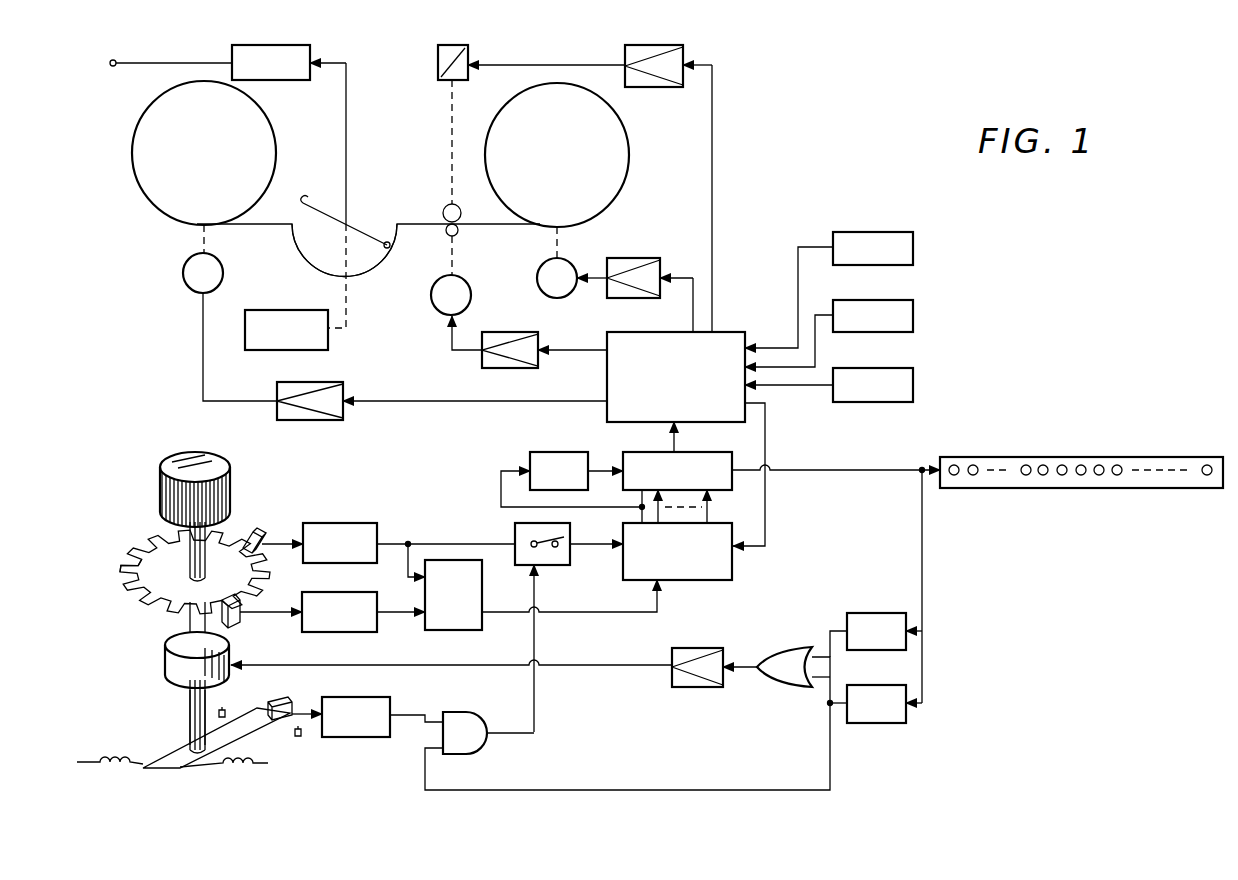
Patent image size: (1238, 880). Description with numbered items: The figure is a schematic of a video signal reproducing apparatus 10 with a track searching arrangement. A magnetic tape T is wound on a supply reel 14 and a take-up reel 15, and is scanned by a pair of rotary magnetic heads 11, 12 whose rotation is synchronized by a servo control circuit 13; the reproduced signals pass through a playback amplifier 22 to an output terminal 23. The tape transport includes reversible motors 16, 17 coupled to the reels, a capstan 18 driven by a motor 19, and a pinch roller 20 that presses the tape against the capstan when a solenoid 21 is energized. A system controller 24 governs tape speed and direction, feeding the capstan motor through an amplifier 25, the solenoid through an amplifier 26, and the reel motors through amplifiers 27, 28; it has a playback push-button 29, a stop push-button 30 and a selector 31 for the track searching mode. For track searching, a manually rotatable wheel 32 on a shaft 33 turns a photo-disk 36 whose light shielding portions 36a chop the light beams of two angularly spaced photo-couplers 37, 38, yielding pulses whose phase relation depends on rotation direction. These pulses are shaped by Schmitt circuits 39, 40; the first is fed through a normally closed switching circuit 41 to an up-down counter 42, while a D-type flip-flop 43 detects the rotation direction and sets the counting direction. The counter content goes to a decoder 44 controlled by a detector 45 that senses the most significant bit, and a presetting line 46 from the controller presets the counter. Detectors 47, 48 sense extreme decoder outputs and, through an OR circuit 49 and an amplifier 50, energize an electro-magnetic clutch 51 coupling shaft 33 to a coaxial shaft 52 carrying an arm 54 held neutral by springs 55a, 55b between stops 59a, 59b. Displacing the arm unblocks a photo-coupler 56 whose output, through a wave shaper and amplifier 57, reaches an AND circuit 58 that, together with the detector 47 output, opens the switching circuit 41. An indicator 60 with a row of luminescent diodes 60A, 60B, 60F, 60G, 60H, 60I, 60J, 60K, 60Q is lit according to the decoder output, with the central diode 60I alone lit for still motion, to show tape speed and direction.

The video signal reproducing apparatus 10 is at (719, 184).
The rotary magnetic head 11 is at (306, 206).
The rotary magnetic head 12 is at (386, 246).
The servo control circuit 13 is at (328, 345).
The supply reel 14 is at (148, 198).
The take-up reel 15 is at (622, 162).
The reversible electric motor 16 is at (195, 294).
The reversible electric motor 17 is at (571, 295).
The capstan 18 is at (446, 235).
The capstan motor 19 is at (471, 293).
The pinch roller 20 is at (446, 207).
The solenoid 21 is at (453, 45).
The playback amplifier 22 is at (272, 45).
The output terminal 23 is at (121, 50).
The system controller 24 is at (738, 332).
The amplifier 25 is at (538, 360).
The amplifier 26 is at (650, 46).
The amplifier 27 is at (318, 421).
The amplifier 28 is at (650, 247).
The mode selecting push-button 29 is at (885, 232).
The push-button 30 is at (913, 303).
The push-button or selector 31 is at (913, 372).
The manually rotatable wheel or dial 32 is at (213, 463).
The shaft 33 is at (215, 637).
The photo-disk 36 is at (160, 570).
The light shielding portion 36a is at (138, 600).
The photo-coupler 37 is at (274, 524).
The photo-coupler 38 is at (240, 628).
The Schmitt circuit 39 is at (373, 523).
The Schmitt circuit 40 is at (371, 594).
The switching circuit 41 is at (515, 530).
The up-down counter 42 is at (733, 572).
The D-type flip-flop 43 is at (458, 632).
The decoder 44 is at (736, 452).
The detector 45 is at (548, 452).
The presetting line 46 is at (765, 437).
The detector 47 is at (891, 725).
The detector 48 is at (897, 613).
The OR circuit 49 is at (779, 690).
The amplifier 50 is at (674, 690).
The electro-magnetic clutch 51 is at (170, 668).
The coaxial shaft 52 is at (190, 713).
The arm 54 is at (250, 730).
The spring 55a is at (98, 760).
The spring 55b is at (232, 775).
The photo-coupler 56 is at (298, 690).
The wave shaper and amplifier 57 is at (378, 698).
The AND circuit 58 is at (483, 704).
The stop 59a is at (255, 702).
The stop 59b is at (303, 737).
The indicator 60 is at (1166, 456).
The luminescent diode 60A is at (954, 464).
The luminescent diode 60B is at (976, 465).
The luminescent diode 60F is at (1026, 476).
The luminescent diode 60G is at (1043, 476).
The luminescent diode 60H is at (1062, 464).
The central luminescent diode 60I is at (1082, 464).
The luminescent diode 60J is at (1099, 476).
The luminescent diode 60K is at (1117, 476).
The luminescent diode 60Q is at (1207, 476).
The magnetic tape T is at (254, 226).